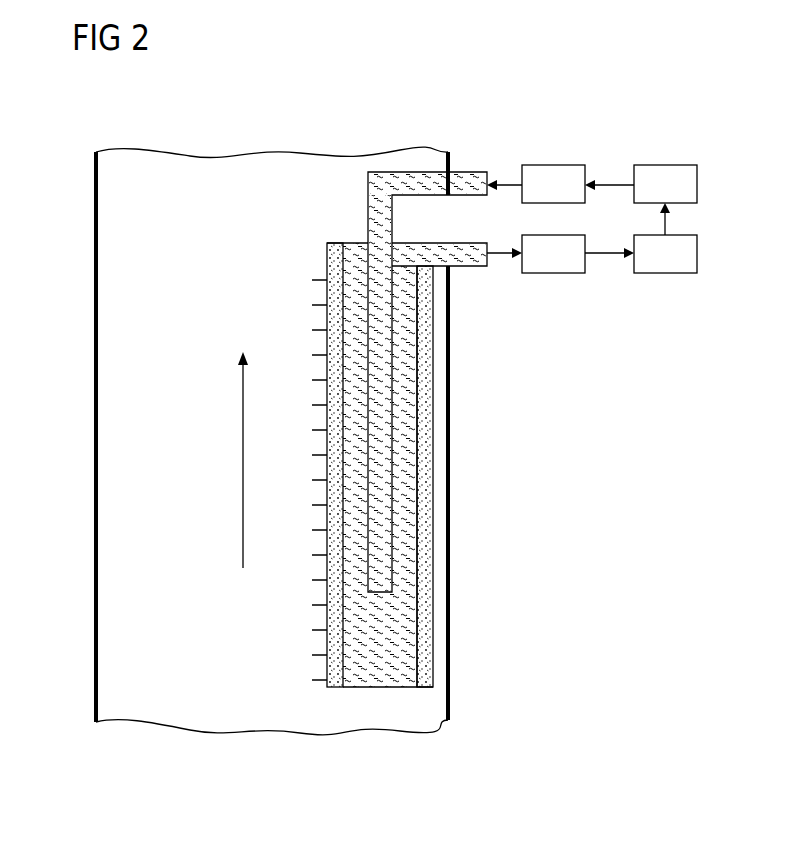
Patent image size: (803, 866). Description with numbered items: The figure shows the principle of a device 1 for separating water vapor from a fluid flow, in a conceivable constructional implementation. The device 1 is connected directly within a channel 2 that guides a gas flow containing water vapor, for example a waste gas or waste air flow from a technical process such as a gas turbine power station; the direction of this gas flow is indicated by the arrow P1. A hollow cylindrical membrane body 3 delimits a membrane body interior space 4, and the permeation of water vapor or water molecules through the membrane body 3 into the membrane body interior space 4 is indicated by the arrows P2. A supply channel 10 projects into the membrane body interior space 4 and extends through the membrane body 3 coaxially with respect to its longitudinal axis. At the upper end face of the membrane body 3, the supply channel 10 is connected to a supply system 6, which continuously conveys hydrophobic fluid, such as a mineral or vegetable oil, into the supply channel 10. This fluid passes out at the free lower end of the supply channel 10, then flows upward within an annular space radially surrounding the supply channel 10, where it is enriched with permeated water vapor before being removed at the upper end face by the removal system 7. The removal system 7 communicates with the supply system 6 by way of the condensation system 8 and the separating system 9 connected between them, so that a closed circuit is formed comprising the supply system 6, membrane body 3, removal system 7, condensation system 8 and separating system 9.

The device 1 is at (468, 107).
The channel 2 is at (451, 470).
The membrane body 3 is at (327, 395).
The membrane body interior space 4 is at (411, 232).
The supply system 6 is at (553, 165).
The removal system 7 is at (555, 273).
The condensation system 8 is at (665, 273).
The separating system 9 is at (665, 165).
The supply channel 10 is at (368, 212).
The arrow indicating gas flow P1 is at (243, 457).
The arrows indicating permeation P2 is at (327, 283).